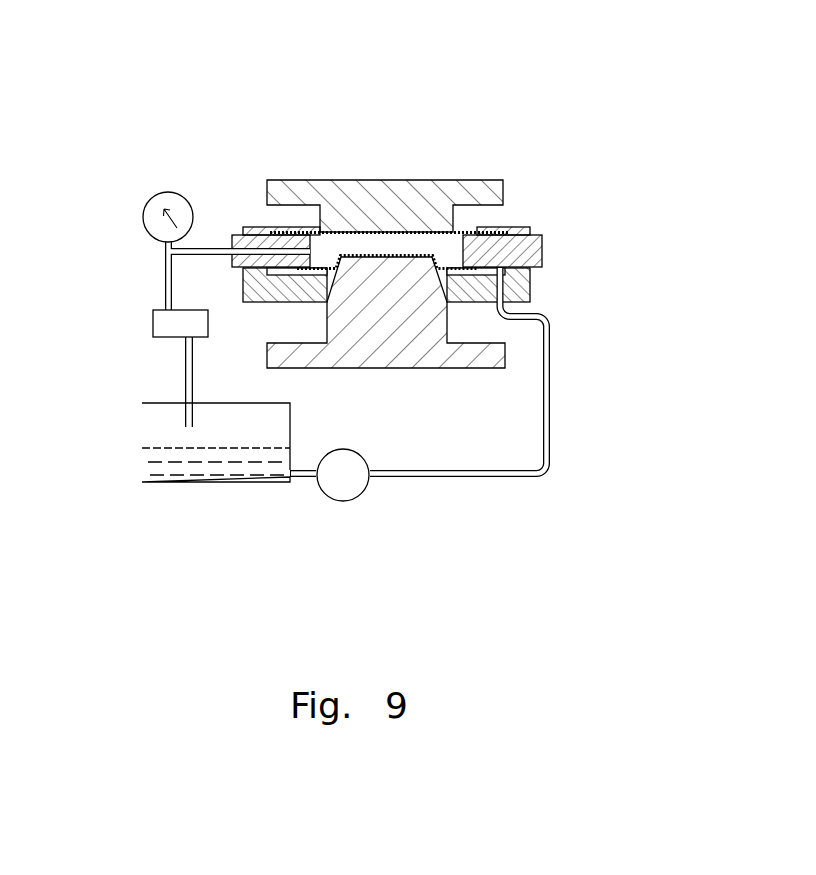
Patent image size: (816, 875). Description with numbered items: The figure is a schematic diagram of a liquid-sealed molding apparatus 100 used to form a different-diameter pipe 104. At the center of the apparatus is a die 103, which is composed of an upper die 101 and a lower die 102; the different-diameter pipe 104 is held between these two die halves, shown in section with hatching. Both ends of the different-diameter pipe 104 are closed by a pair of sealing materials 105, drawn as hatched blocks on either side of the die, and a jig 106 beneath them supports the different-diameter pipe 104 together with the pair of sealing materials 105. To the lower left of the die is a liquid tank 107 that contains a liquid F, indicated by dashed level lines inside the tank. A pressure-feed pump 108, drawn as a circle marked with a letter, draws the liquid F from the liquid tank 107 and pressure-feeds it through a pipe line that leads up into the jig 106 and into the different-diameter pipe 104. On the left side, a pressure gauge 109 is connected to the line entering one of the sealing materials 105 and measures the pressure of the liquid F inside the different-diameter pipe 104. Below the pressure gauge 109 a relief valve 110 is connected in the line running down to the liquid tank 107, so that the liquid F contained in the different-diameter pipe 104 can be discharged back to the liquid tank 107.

The liquid-sealed molding apparatus 100 is at (583, 99).
The upper die 101 is at (380, 187).
The lower die 102 is at (363, 363).
The die 103 is at (322, 170).
The different-diameter pipe 104 is at (428, 230).
The sealing materials 105 is at (232, 236).
The jig 106 is at (513, 290).
The liquid tank 107 is at (140, 438).
The pressure-feed pump 108 is at (352, 460).
The pressure gauge 109 is at (153, 200).
The relief valve 110 is at (152, 323).
The liquid F is at (205, 477).